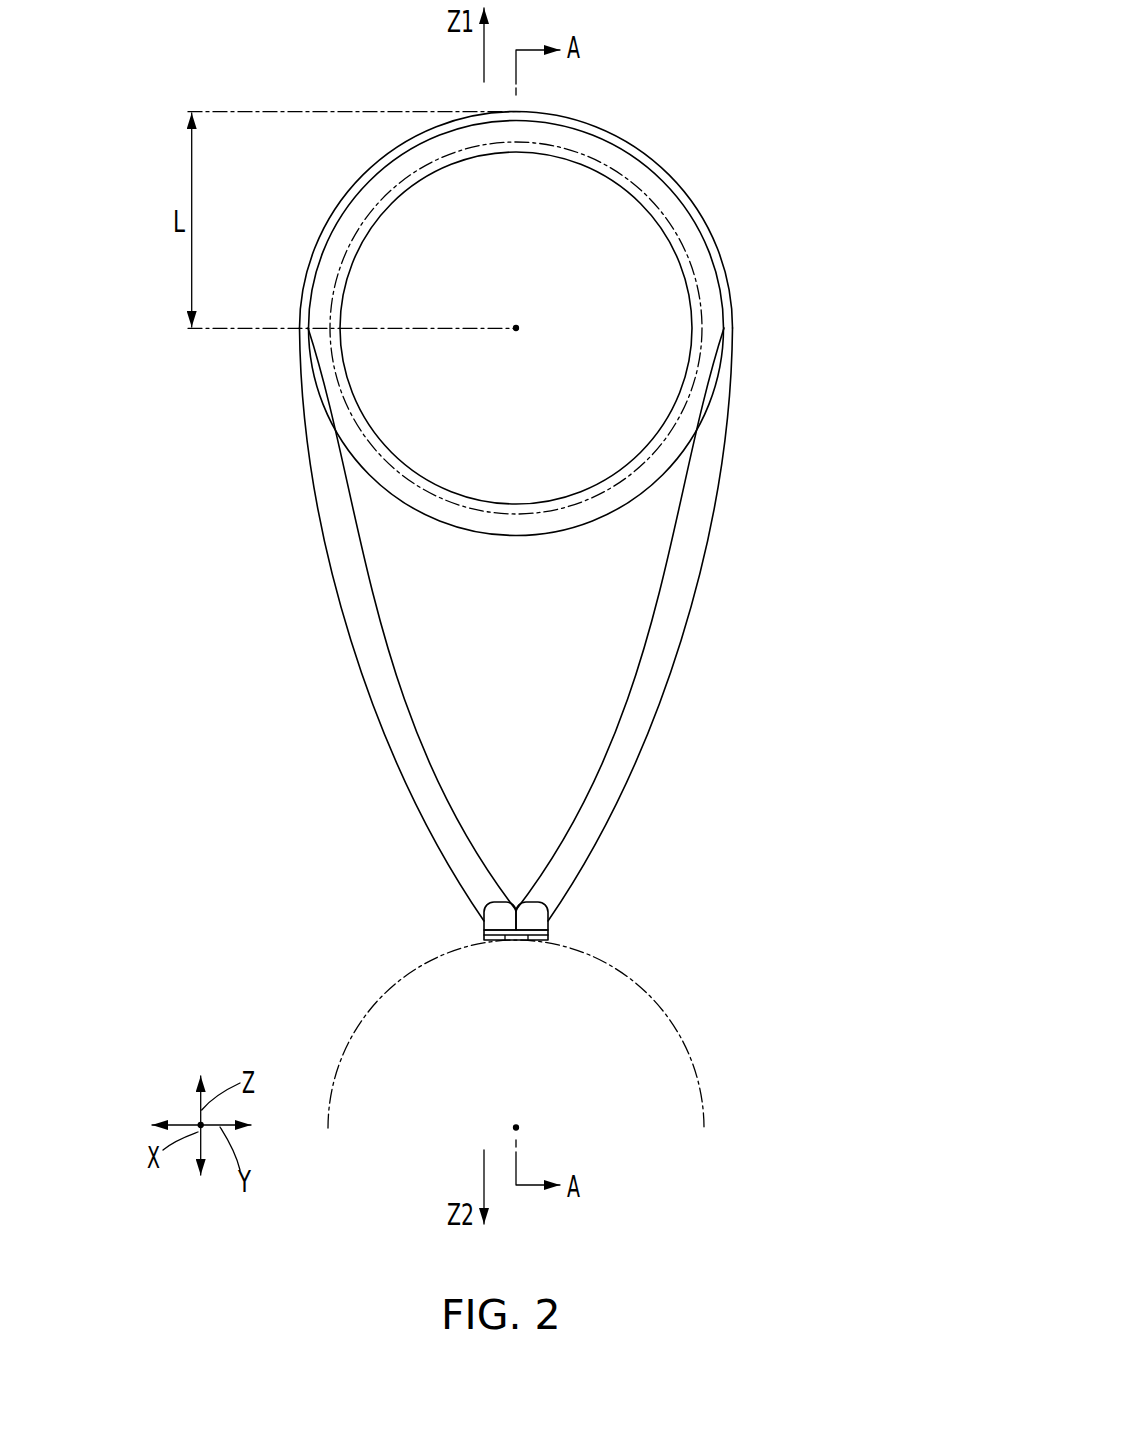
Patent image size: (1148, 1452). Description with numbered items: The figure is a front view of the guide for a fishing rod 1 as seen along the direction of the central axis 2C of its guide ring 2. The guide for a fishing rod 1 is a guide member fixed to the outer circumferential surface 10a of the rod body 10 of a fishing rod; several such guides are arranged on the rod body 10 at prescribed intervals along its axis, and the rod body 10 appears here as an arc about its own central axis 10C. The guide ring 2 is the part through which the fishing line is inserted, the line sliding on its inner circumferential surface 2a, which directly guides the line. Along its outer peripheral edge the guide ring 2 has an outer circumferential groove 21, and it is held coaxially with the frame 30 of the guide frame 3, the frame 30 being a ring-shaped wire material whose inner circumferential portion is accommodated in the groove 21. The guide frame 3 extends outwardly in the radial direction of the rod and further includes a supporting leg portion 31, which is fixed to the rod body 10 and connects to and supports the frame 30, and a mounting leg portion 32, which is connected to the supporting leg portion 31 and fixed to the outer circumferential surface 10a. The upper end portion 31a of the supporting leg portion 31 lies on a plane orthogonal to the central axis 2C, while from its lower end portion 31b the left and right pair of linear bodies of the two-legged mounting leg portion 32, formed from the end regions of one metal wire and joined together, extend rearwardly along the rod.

The guide for a fishing rod 1 is at (724, 105).
The guide ring 2 is at (336, 222).
The inner circumferential surface 2a is at (648, 212).
The central axis 2C is at (516, 328).
The outer circumferential groove 21 is at (407, 180).
The guide frame 3 is at (730, 442).
The frame 30 is at (613, 134).
The supporting leg portion 31 is at (672, 672).
The upper end portion 31a is at (305, 428).
The lower end portion 31b is at (473, 897).
The mounting leg portion 32 is at (552, 928).
The rod body 10 is at (666, 1015).
The outer circumferential surface 10a is at (364, 1005).
The central axis 10C is at (516, 1127).